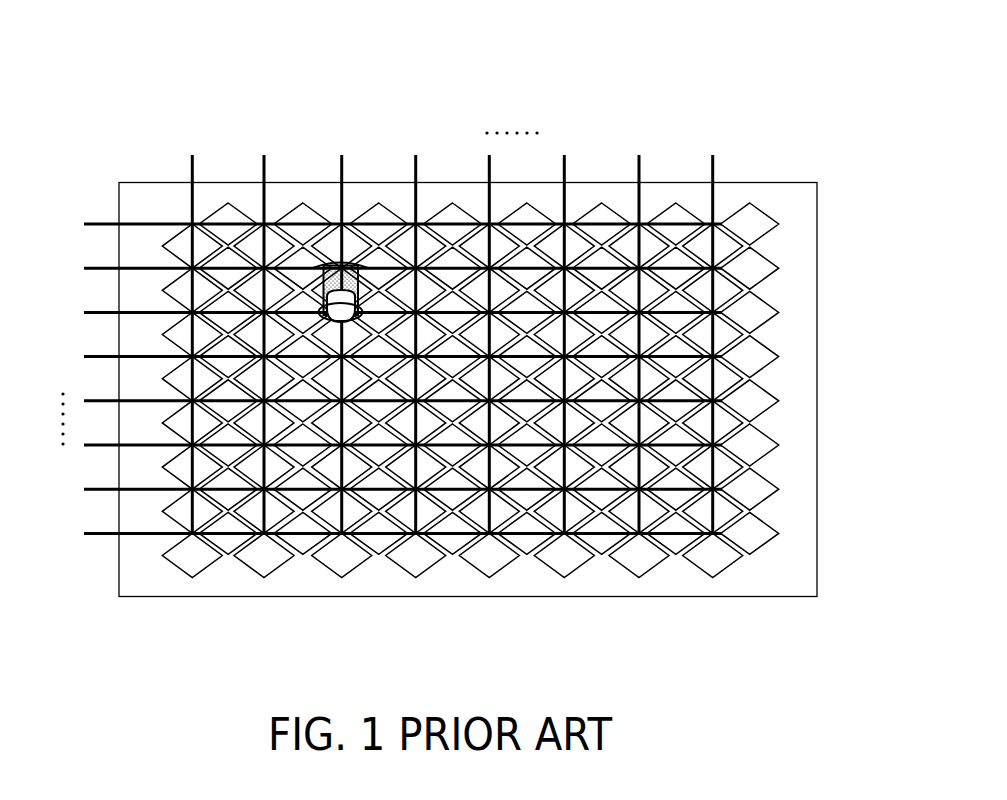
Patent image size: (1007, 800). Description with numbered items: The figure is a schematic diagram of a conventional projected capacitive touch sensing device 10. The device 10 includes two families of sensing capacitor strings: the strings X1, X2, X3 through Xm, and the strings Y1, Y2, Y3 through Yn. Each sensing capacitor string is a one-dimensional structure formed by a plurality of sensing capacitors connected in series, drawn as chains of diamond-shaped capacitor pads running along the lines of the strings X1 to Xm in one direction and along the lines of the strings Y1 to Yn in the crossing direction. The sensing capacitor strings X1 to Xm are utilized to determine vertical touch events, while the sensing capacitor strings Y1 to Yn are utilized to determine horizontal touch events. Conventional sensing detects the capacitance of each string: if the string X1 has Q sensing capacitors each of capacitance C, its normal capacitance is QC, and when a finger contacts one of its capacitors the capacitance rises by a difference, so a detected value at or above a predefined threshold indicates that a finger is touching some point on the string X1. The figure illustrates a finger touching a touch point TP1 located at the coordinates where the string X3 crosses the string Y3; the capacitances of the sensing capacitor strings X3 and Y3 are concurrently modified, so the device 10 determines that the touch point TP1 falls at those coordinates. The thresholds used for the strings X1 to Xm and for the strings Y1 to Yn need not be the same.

The projected capacitive touch sensing device 10 is at (723, 96).
The touch point TP1 is at (380, 305).
The sensing capacitor string X1 is at (190, 328).
The sensing capacitor string X2 is at (261, 328).
The sensing capacitor string X3 is at (339, 328).
The sensing capacitor string Xm is at (708, 328).
The sensing capacitor string Y1 is at (386, 226).
The sensing capacitor string Y2 is at (386, 270).
The sensing capacitor string Y3 is at (386, 314).
The sensing capacitor string Yn is at (386, 535).